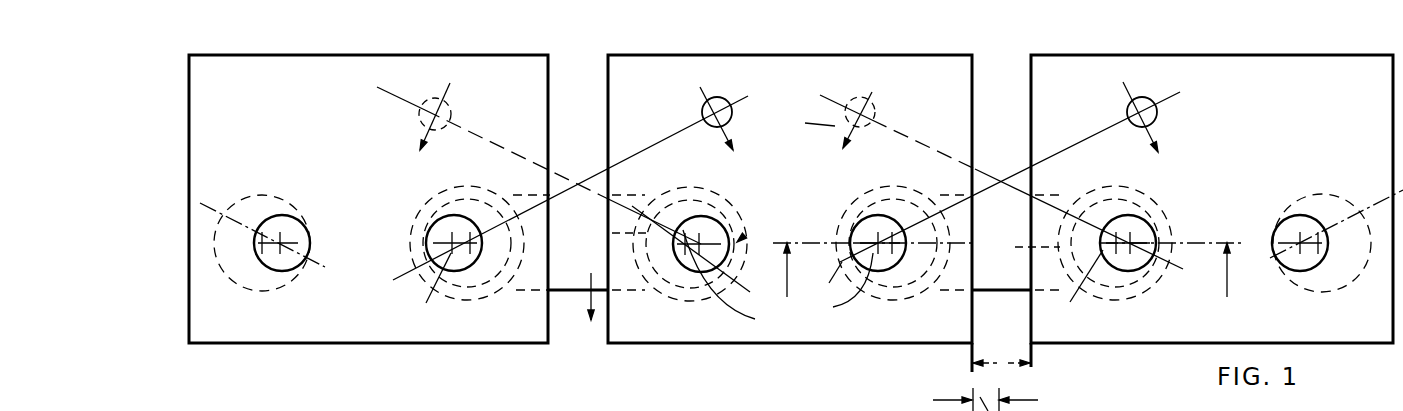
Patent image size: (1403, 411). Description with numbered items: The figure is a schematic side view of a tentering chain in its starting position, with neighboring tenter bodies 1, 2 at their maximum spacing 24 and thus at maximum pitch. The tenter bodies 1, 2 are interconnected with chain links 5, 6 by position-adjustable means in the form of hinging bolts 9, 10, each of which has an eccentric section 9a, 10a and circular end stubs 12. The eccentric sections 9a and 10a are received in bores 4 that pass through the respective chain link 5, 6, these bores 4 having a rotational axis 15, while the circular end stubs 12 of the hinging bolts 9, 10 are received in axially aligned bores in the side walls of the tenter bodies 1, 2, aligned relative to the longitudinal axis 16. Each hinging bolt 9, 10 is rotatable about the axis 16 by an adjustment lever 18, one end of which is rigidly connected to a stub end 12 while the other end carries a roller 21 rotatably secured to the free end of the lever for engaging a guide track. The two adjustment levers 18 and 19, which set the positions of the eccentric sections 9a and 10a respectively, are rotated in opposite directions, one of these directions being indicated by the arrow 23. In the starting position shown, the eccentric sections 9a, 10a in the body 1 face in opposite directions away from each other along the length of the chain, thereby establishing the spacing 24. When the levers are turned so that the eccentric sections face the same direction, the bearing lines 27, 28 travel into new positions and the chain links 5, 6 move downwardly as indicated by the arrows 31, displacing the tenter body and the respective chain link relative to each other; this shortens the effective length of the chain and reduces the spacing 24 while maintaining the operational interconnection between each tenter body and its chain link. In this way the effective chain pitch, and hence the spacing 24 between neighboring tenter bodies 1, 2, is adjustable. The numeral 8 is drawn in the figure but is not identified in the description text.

The tenter body 1 is at (815, 331).
The tenter body 2 is at (353, 330).
The bore 4 is at (551, 252).
The chain link 5 is at (562, 280).
The chain link 6 is at (1001, 343).
The direction arrow 8 is at (1265, 310).
The position adjustable hinging bolt 9 is at (723, 222).
The eccentric section 9a is at (607, 222).
The position adjustable hinging bolt 10 is at (430, 220).
The eccentric section 10a is at (492, 267).
The circular end stub 12 is at (465, 270).
The rotational axis 15 is at (755, 283).
The longitudinal axis 16 is at (1180, 310).
The adjustment lever 18 is at (657, 140).
The adjustment lever 19 is at (487, 138).
The roller 21 is at (428, 122).
The arrow 23 is at (1158, 132).
The spacing 24 is at (1008, 365).
The bearing line 27 is at (414, 243).
The bearing line 28 is at (740, 241).
The arrow 31 is at (594, 303).